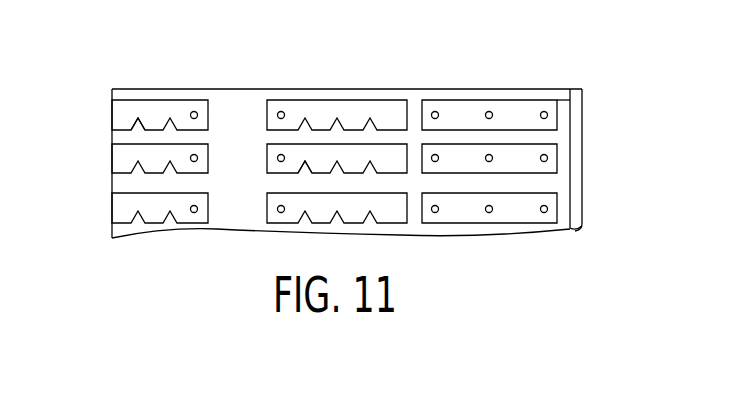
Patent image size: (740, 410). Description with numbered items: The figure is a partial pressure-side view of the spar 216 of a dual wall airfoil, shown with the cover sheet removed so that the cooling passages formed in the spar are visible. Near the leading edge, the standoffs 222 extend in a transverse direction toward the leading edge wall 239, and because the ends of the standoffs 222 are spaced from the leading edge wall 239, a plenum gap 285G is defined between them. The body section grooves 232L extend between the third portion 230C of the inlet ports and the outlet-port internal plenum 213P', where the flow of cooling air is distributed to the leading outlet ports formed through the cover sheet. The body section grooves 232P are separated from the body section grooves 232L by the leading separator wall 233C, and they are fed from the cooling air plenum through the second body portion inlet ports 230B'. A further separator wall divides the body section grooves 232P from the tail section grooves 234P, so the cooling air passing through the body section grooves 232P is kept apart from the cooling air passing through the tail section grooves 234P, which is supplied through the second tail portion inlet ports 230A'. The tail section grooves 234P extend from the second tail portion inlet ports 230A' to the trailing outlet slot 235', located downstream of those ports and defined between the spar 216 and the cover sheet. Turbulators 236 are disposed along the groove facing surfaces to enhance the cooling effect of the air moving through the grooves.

The trailing outlet slot 235' is at (73, 163).
The turbulators 236 is at (136, 124).
The tail section grooves 234P is at (155, 110).
The second tail portion inlet ports 230A' is at (215, 129).
The second body portion inlet ports 230B' is at (259, 114).
The body section grooves 232P is at (319, 150).
The leading separator wall 233C is at (413, 112).
The standoffs 222 is at (462, 180).
The body section grooves 232L is at (522, 210).
The plenum gap 285G is at (566, 128).
The leading edge wall 239 is at (583, 100).
The spar 216 is at (237, 195).
The third portion of the inlet ports 230C is at (541, 212).
The outlet-port internal plenum 213P' is at (578, 251).